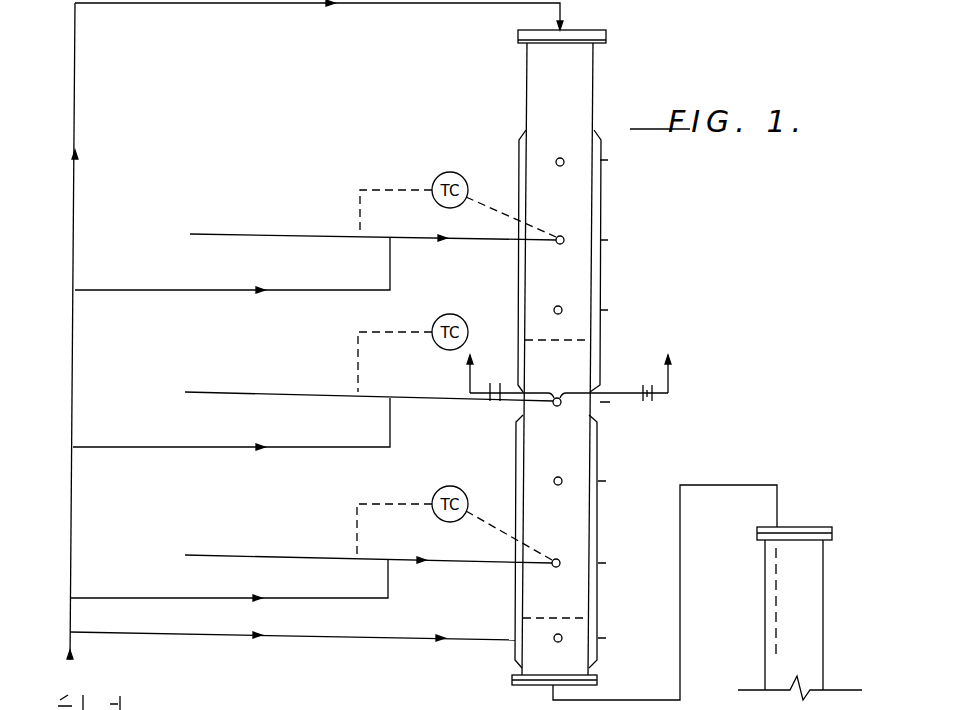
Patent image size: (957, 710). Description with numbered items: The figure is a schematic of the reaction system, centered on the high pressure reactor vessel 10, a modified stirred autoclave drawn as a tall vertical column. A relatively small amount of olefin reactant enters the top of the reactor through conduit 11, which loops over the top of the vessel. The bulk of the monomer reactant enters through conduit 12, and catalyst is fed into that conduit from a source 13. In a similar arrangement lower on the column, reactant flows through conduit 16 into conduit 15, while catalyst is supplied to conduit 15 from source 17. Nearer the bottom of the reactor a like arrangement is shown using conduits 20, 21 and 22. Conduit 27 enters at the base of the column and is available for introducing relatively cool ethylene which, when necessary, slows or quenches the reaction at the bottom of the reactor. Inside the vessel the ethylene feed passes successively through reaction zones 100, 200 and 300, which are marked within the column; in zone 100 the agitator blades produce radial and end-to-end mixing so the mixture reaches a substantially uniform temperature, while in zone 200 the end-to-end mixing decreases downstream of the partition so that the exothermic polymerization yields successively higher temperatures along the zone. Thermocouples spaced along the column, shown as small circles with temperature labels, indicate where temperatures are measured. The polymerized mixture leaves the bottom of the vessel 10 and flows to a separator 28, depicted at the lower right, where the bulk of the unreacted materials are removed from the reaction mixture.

The high pressure reactor vessel 10 is at (527, 88).
The conduit 11 is at (232, 5).
The conduit 12 is at (484, 240).
The source 13 is at (359, 235).
The conduit 15 is at (455, 401).
The conduit 16 is at (200, 447).
The source 17 is at (356, 392).
The conduit 20 is at (428, 564).
The conduit 21 is at (182, 598).
The conduit 22 is at (353, 556).
The conduit 27 is at (343, 642).
The separator 28 is at (812, 589).
The reaction zone 100 is at (572, 292).
The reaction zone 200 is at (572, 456).
The reaction zone 300 is at (575, 668).